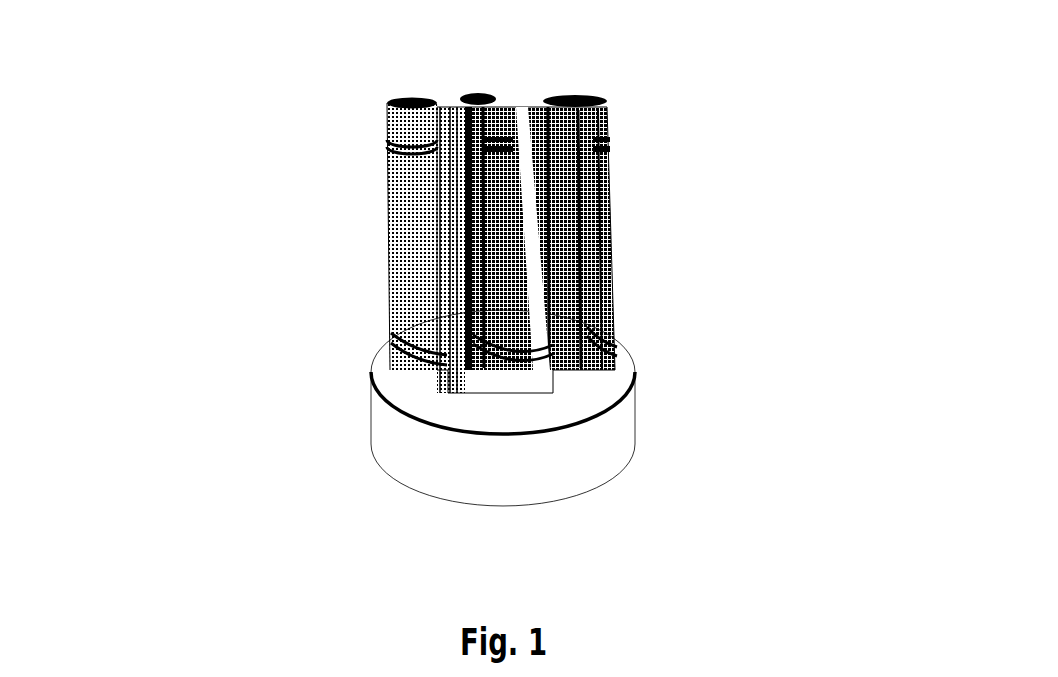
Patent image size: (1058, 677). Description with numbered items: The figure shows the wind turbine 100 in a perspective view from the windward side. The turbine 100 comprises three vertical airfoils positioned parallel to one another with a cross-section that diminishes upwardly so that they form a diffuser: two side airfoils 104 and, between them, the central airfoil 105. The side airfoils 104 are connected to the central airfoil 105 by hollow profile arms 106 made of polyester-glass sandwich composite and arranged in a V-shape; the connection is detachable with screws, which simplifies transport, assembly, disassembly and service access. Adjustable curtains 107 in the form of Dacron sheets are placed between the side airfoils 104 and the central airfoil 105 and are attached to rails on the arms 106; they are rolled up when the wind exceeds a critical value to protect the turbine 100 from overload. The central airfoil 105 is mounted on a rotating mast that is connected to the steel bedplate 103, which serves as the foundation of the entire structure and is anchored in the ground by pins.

The wind turbine 100 is at (501, 333).
The bedplate 103 is at (370, 440).
The side airfoils 104 is at (612, 220).
The central airfoil 105 is at (503, 185).
The arms 106 is at (605, 123).
The curtains 107 is at (455, 256).